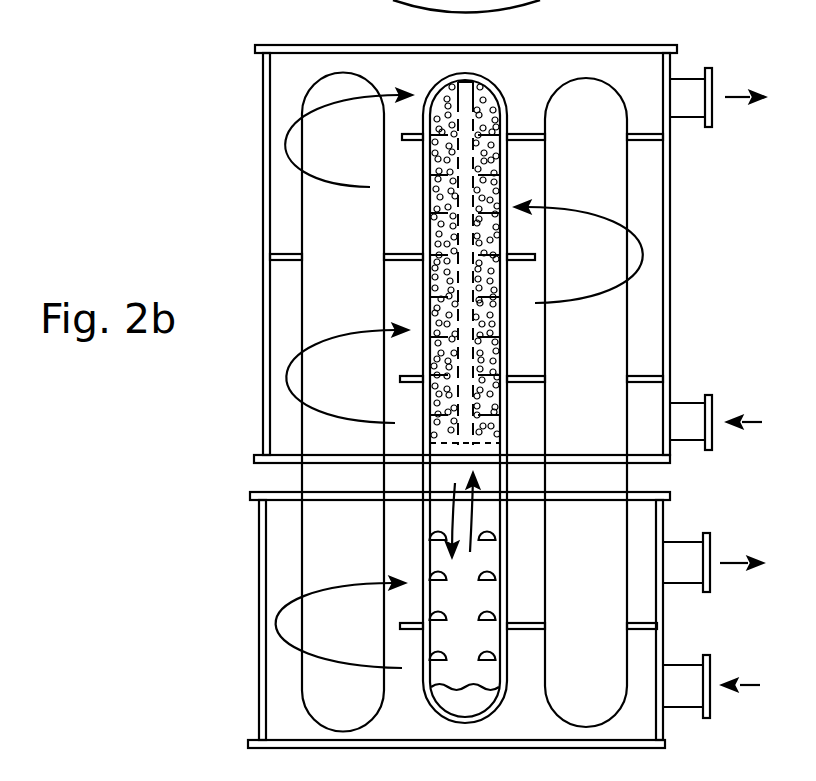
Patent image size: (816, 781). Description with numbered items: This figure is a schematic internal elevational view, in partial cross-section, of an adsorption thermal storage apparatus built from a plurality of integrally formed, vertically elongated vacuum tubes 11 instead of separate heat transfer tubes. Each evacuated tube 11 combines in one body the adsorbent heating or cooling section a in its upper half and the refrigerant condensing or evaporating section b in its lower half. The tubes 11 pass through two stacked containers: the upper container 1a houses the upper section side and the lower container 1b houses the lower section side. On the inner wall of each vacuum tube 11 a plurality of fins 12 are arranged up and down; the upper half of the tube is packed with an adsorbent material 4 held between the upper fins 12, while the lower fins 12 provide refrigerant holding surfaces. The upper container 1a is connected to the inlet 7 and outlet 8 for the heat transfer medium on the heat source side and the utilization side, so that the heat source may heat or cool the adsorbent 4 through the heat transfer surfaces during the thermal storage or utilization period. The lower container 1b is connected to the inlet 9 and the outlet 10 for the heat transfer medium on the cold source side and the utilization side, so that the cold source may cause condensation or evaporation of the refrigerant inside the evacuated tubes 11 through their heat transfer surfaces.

The upper container 1a is at (670, 235).
The lower container 1b is at (259, 632).
The vacuum tube 11 is at (485, 78).
The fins 12 is at (488, 128).
The adsorbent material 4 is at (498, 162).
The outlet 8 is at (718, 87).
The inlet 7 is at (717, 410).
The outlet 10 is at (713, 555).
The inlet 9 is at (713, 678).
The adsorbent heating or cooling section a is at (465, 297).
The refrigerant condensing or evaporating section b is at (458, 603).